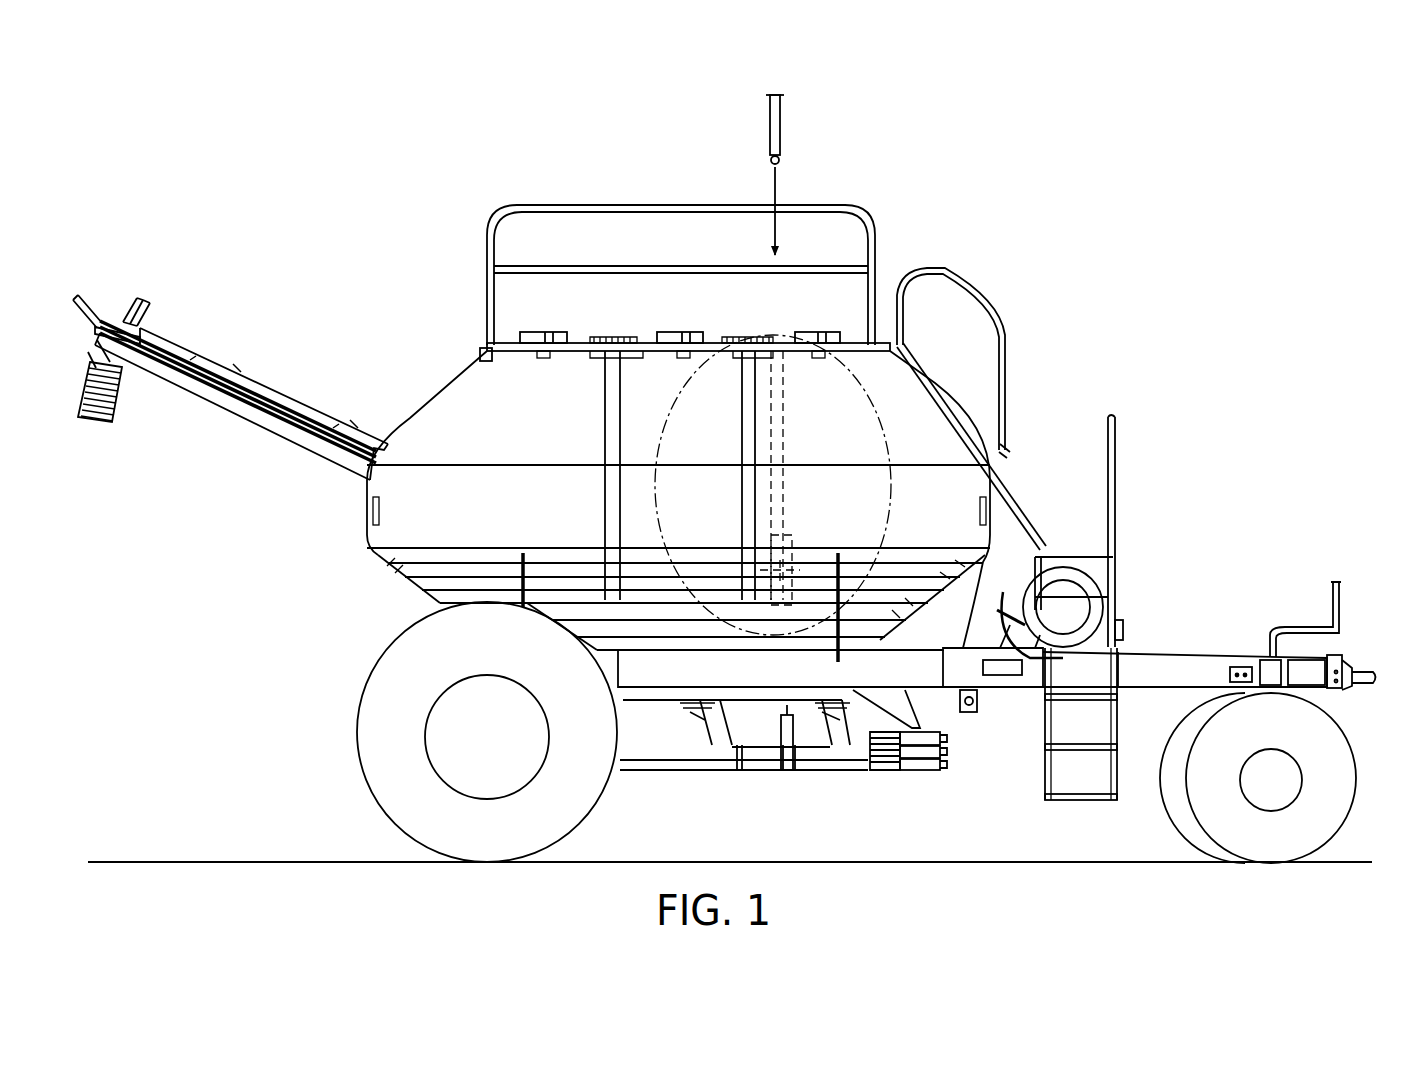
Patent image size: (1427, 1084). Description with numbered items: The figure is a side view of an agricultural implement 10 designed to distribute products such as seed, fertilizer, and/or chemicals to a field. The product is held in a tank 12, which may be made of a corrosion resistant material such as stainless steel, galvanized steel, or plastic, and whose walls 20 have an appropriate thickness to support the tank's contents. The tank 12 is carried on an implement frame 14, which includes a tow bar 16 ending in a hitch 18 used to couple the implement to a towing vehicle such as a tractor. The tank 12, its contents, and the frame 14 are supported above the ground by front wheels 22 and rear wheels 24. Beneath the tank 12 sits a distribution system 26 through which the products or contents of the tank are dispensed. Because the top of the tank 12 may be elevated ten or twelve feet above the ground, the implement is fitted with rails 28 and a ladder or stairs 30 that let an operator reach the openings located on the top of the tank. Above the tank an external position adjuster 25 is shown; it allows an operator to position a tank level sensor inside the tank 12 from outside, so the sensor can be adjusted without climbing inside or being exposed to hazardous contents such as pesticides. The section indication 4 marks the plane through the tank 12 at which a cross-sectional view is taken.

The agricultural implement 10 is at (744, 501).
The tank 12 is at (672, 433).
The implement frame 14 is at (906, 607).
The tow bar 16 is at (1195, 660).
The hitch 18 is at (1350, 690).
The walls 20 is at (432, 582).
The front wheels 22 is at (1270, 838).
The rear wheels 24 is at (465, 830).
The external position adjuster 25 is at (788, 128).
The distribution system 26 is at (752, 782).
The rails 28 is at (958, 282).
The ladder or stairs 30 is at (950, 392).
The section line 4- 4 is at (745, 365).